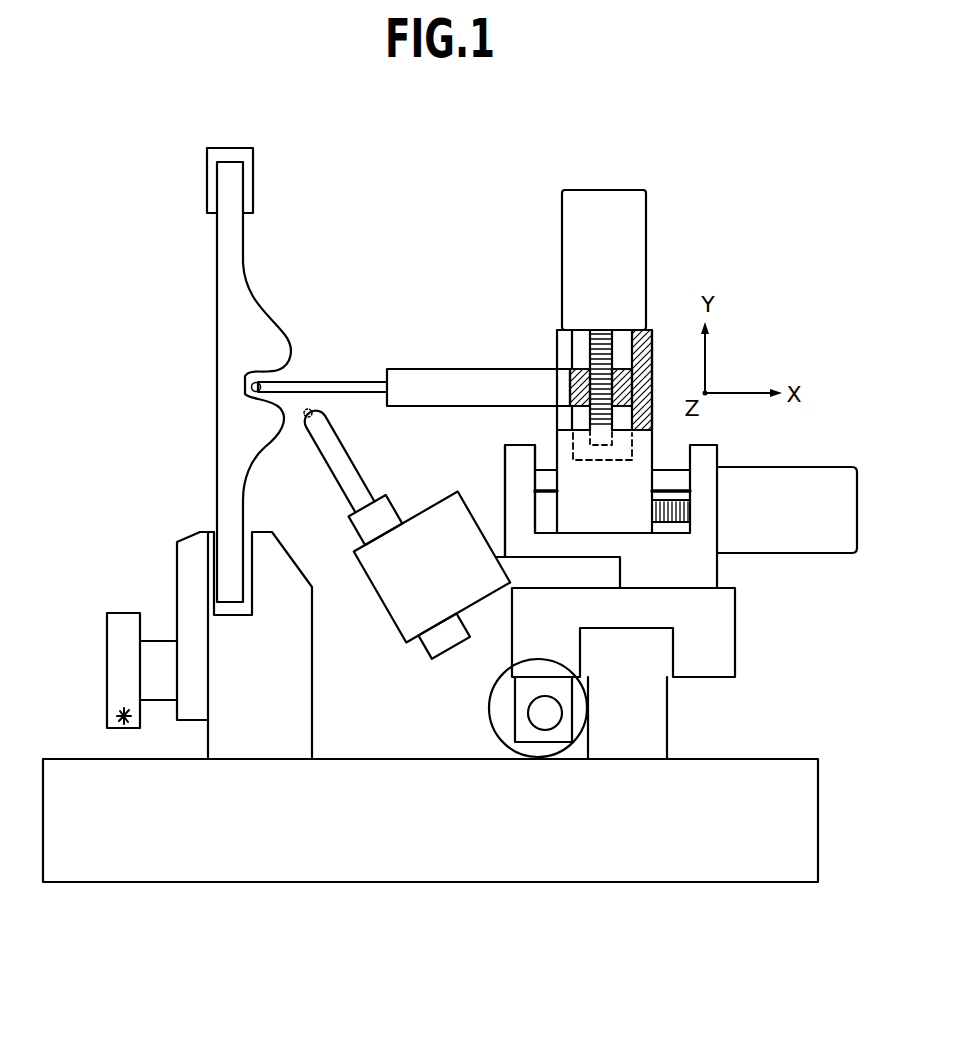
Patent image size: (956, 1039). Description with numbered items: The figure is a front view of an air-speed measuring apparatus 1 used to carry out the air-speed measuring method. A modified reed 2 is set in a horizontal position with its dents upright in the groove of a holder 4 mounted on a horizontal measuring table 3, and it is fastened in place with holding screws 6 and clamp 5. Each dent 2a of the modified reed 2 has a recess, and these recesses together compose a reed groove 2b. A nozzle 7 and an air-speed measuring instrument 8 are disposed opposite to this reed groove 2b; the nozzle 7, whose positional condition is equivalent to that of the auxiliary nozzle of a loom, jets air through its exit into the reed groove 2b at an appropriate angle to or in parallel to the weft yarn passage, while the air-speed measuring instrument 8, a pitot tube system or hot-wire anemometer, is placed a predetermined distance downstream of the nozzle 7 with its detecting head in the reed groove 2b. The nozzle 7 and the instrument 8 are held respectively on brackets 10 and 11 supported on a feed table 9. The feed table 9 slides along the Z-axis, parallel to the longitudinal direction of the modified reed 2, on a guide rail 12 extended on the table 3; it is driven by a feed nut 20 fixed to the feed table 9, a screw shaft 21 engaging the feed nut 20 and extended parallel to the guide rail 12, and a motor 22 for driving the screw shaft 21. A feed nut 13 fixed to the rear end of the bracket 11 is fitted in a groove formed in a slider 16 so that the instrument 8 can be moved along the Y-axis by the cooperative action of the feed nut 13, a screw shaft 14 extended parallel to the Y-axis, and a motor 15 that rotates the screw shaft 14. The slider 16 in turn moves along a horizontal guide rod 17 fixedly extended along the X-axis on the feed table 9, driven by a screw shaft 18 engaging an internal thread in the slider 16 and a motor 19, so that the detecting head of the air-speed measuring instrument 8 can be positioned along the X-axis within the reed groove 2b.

The measuring apparatus 1 is at (700, 181).
The modified reed 2 is at (206, 192).
The dent 2a is at (214, 332).
The reed groove 2b is at (244, 387).
The measuring table 3 is at (385, 758).
The holder 4 is at (313, 677).
The clamp 5 is at (176, 555).
The holding screws 6 is at (106, 704).
The nozzle 7 is at (347, 451).
The air-speed measuring instrument 8 is at (342, 381).
The feed table 9 is at (731, 647).
The bracket 10 is at (383, 610).
The bracket 11 is at (465, 368).
The guide rail 12 is at (660, 720).
The feed nut 13 is at (570, 373).
The screw shaft 14 is at (605, 427).
The motor 15 is at (561, 220).
The slider 16 is at (565, 512).
The guide rod 17 is at (542, 480).
The screw shaft 18 is at (688, 502).
The motor 19 is at (798, 555).
The feed nut 20 is at (518, 733).
The screw shaft 21 is at (540, 710).
The motor 22 is at (488, 713).